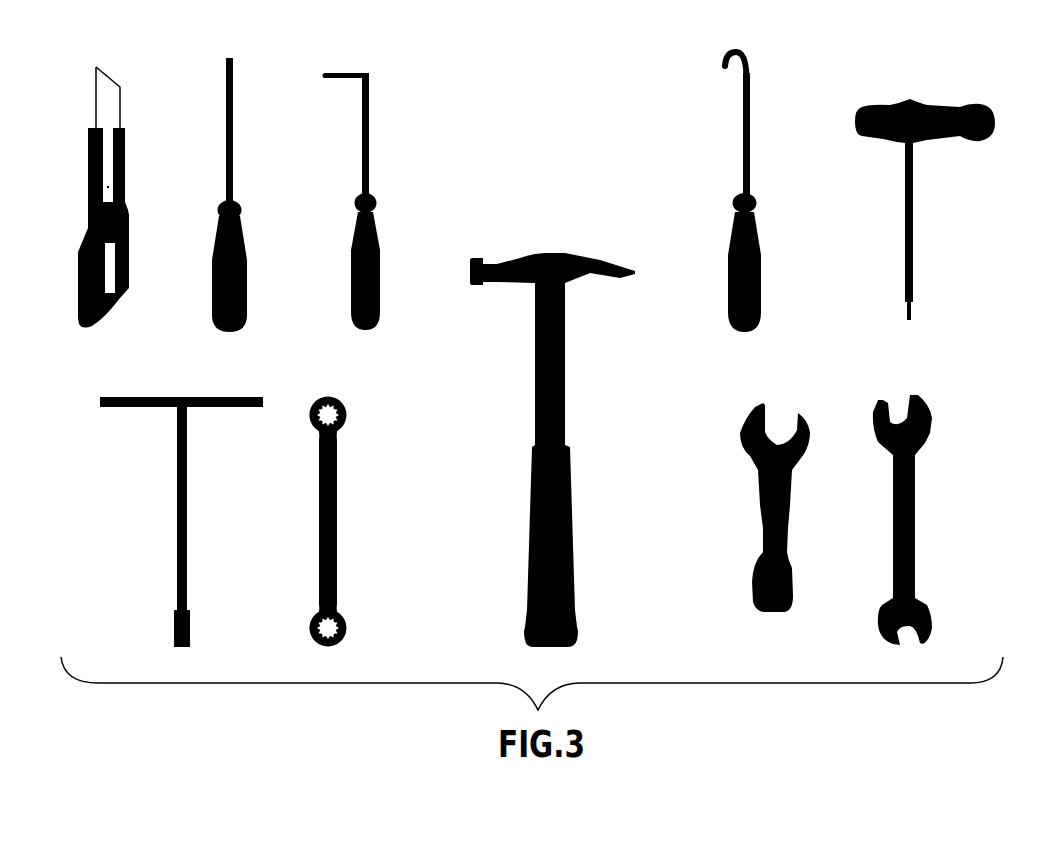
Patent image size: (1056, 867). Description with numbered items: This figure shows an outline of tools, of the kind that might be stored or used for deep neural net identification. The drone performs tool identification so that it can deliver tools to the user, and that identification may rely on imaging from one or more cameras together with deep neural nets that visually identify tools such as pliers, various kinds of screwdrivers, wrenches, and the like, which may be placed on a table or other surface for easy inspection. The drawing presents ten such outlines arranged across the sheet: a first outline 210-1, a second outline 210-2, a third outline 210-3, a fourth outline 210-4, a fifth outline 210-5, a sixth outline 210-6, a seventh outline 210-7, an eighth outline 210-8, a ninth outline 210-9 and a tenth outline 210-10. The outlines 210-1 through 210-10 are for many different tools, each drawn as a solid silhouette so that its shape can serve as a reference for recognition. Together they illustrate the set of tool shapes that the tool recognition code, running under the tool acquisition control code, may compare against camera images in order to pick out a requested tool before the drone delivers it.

The tool outline 210-1 is at (112, 76).
The tool outline 210-2 is at (234, 64).
The tool outline 210-3 is at (369, 88).
The tool outline 210-4 is at (753, 58).
The tool outline 210-5 is at (917, 100).
The tool outline 210-6 is at (177, 508).
The tool outline 210-7 is at (338, 505).
The tool outline 210-8 is at (570, 252).
The tool outline 210-9 is at (760, 510).
The tool outline 210-10 is at (915, 505).